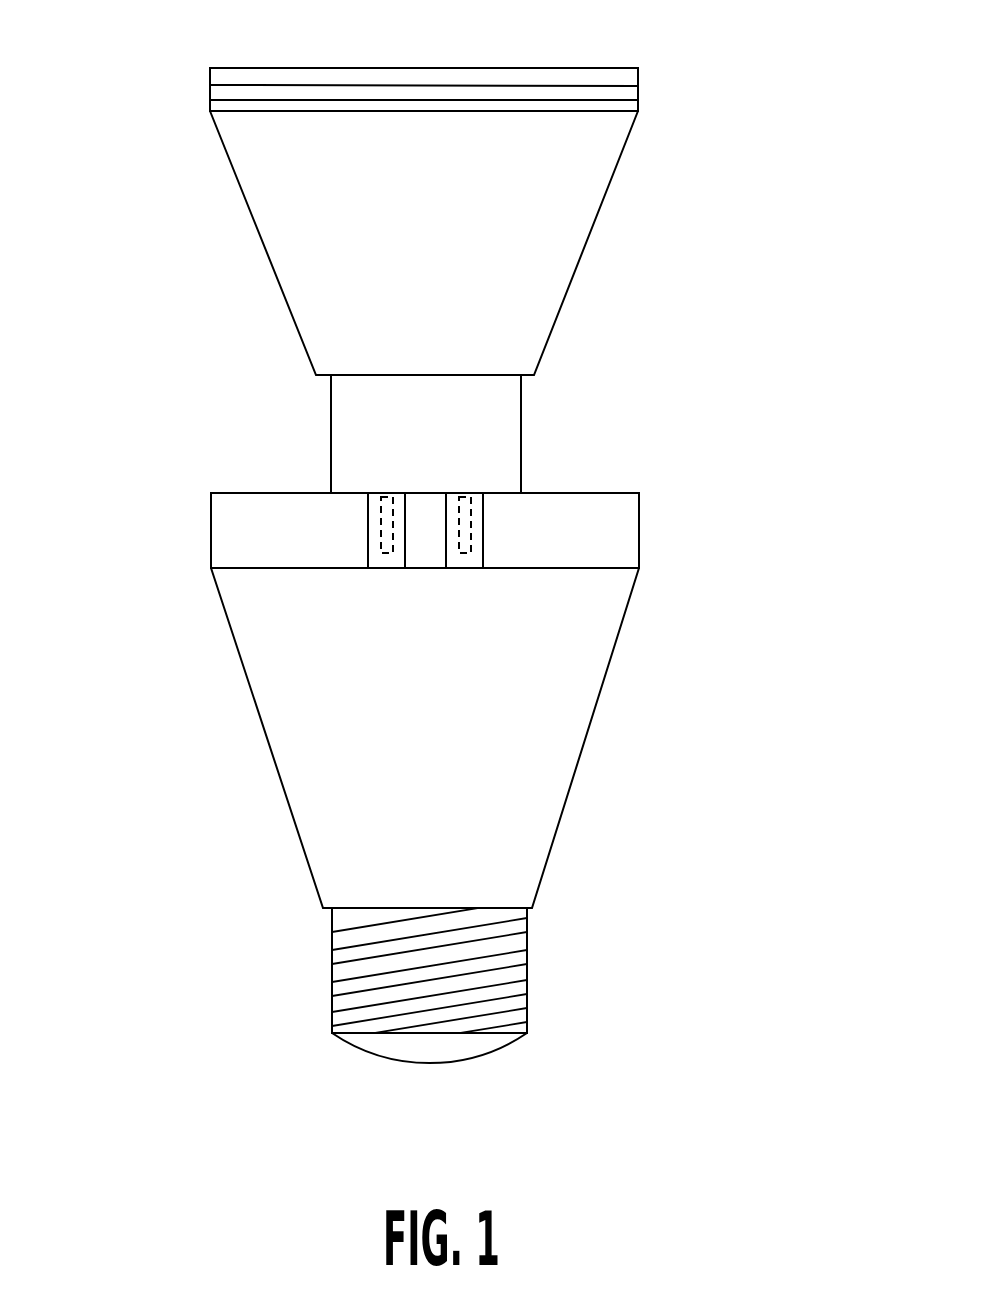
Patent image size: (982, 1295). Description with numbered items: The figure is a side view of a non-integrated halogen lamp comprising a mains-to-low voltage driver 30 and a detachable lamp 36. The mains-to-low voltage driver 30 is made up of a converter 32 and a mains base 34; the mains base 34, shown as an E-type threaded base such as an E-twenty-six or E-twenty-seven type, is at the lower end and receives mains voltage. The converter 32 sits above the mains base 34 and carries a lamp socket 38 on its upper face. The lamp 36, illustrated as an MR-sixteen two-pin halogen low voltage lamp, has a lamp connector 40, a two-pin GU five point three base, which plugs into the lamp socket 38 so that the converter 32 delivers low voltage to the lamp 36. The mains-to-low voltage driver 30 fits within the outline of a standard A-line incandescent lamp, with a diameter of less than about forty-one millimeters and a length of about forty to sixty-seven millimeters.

The mains-to-low voltage driver 30 is at (211, 794).
The converter 32 is at (553, 722).
The mains base 34 is at (527, 942).
The lamp 36 is at (575, 205).
The lamp socket 38 is at (485, 548).
The lamp connector 40 is at (471, 520).